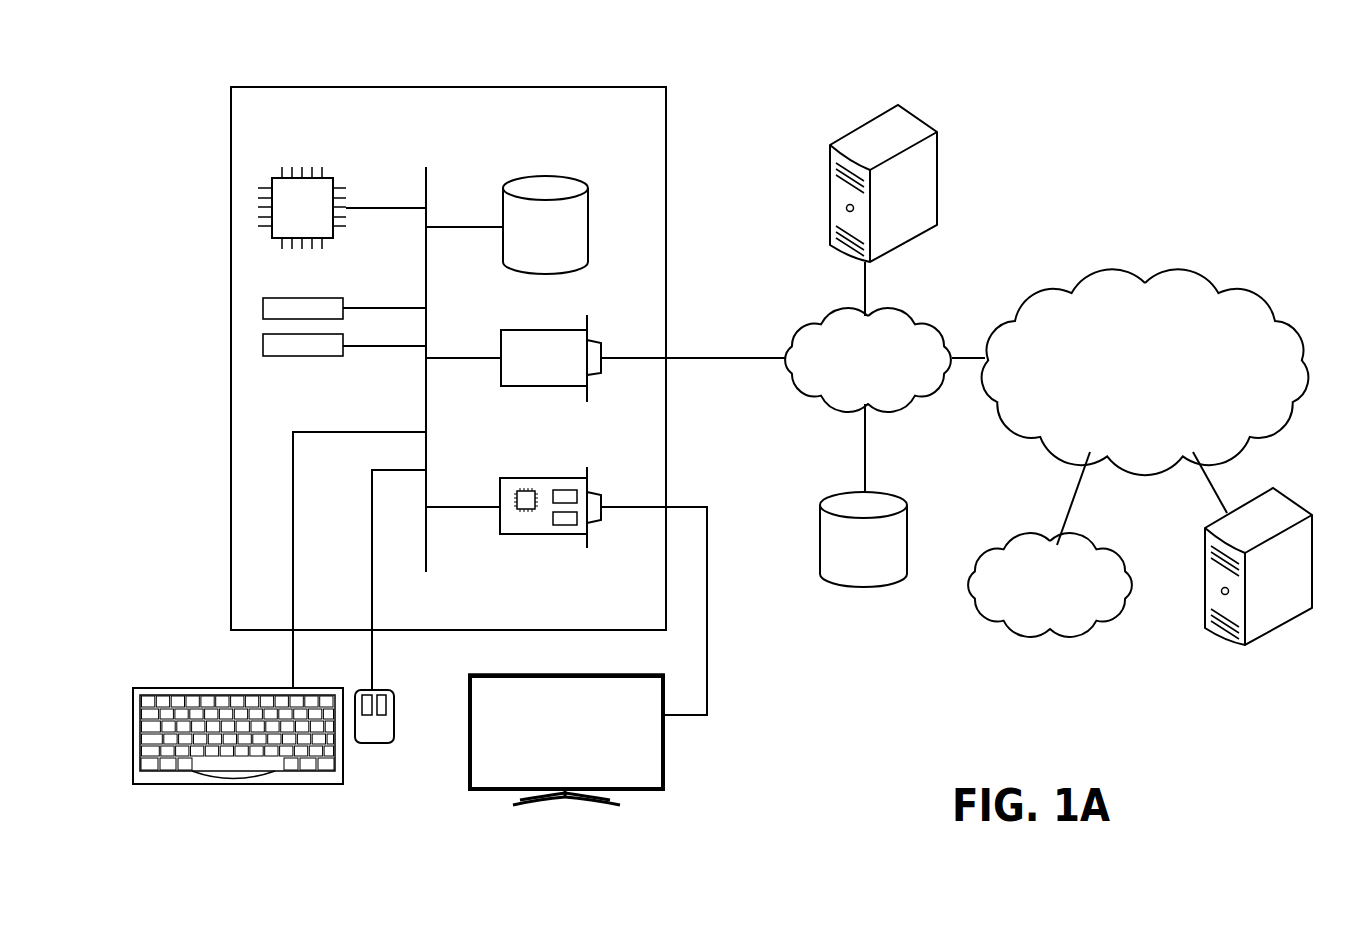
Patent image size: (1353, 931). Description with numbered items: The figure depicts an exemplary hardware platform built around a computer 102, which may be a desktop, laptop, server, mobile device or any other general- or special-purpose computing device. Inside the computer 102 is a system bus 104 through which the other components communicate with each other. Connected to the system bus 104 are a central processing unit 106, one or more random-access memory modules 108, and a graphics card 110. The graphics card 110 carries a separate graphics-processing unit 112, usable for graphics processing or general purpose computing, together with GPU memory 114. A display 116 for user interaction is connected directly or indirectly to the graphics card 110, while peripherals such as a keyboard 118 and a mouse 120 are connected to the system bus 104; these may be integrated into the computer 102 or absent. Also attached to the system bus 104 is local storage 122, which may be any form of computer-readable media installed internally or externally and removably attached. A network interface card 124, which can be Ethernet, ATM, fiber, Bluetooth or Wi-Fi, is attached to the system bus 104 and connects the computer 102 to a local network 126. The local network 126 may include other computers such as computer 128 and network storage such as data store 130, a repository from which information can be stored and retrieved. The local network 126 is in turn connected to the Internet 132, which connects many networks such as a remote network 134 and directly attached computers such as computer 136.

The computer 102 is at (618, 86).
The system bus 104 is at (426, 180).
The central processing unit 106 is at (325, 178).
The random-access memory modules 108 is at (343, 341).
The graphics card 110 is at (500, 488).
The graphics-processing unit 112 is at (526, 513).
The GPU memory 114 is at (563, 527).
The display 116 is at (665, 772).
The keyboard 118 is at (240, 784).
The mouse 120 is at (372, 743).
The local storage 122 is at (588, 210).
The network interface card 124 is at (500, 338).
The local network 126 is at (923, 308).
The computer 128 is at (922, 120).
The data store 130 is at (898, 493).
The Internet 132 is at (1190, 273).
The remote network 134 is at (1112, 538).
The computer 136 is at (1288, 492).